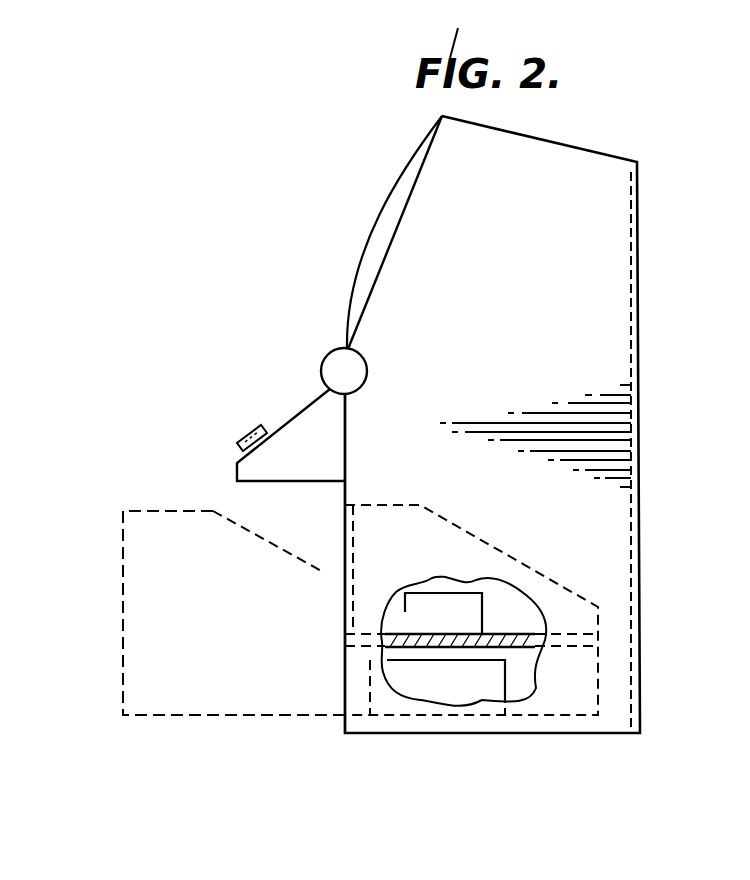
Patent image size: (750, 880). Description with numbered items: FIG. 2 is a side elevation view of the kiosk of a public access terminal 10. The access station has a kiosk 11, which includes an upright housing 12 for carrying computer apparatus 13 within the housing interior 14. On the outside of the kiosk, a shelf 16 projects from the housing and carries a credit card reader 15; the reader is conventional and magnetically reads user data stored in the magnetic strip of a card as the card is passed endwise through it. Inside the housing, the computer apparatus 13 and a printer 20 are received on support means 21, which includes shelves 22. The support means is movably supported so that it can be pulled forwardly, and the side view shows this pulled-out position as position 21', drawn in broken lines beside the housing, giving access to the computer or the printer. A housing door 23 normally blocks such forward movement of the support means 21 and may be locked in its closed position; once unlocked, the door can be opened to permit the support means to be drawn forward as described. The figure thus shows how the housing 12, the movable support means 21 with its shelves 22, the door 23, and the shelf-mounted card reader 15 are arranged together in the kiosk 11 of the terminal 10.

The public access terminal 10 is at (352, 178).
The kiosk 11 is at (631, 300).
The upright housing 12 is at (519, 362).
The computer apparatus 13 is at (450, 603).
The housing interior 14 is at (500, 605).
The credit card reader 15 is at (248, 436).
The shelf 16 is at (306, 463).
The printer 20 is at (420, 690).
The support means 21 is at (392, 660).
The forward position of support means 21' is at (183, 613).
The shelves 22 is at (505, 621).
The housing door 23 is at (347, 590).